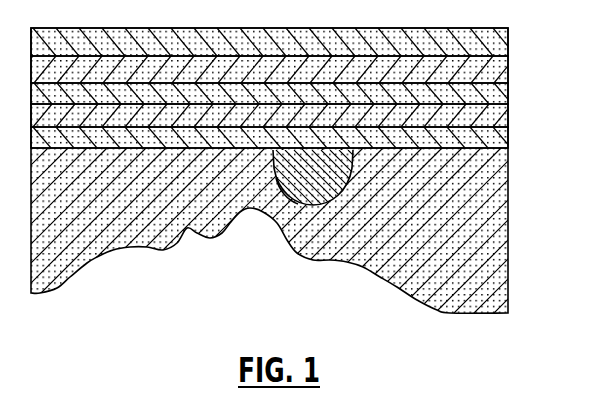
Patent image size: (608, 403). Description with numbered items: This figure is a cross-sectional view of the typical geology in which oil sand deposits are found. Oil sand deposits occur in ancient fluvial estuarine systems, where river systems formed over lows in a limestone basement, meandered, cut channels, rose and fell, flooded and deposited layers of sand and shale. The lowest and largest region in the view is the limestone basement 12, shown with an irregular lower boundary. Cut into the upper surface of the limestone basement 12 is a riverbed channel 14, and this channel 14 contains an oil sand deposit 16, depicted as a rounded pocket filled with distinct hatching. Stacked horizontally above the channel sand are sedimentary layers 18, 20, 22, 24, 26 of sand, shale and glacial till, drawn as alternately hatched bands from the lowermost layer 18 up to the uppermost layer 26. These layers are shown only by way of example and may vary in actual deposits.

The limestone basement 12 is at (506, 233).
The riverbed channel 14 is at (282, 192).
The oil sand deposit 16 is at (330, 183).
The sedimentary layer 18 is at (507, 138).
The sedimentary layer 20 is at (507, 115).
The sedimentary layer 22 is at (507, 95).
The sedimentary layer 24 is at (507, 73).
The sedimentary layer 26 is at (507, 46).